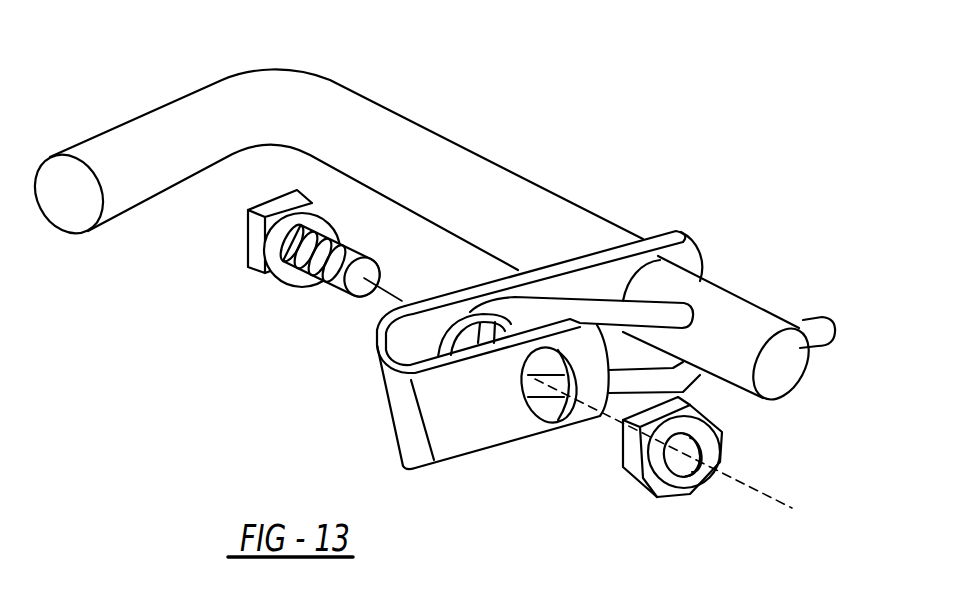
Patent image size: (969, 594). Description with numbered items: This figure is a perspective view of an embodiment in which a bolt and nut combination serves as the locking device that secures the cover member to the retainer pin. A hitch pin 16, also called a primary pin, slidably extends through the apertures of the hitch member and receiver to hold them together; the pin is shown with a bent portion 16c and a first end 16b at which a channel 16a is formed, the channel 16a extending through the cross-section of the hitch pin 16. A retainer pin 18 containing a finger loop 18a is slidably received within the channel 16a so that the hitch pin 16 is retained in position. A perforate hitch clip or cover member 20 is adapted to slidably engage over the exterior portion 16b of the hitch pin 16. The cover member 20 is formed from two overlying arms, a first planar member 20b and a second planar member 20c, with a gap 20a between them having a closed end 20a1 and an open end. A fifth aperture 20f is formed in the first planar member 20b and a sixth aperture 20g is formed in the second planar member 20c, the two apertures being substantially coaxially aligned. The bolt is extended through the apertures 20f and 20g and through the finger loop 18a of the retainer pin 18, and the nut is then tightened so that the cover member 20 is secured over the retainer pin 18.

The hitch pin 16 is at (392, 120).
The channel 16a is at (680, 308).
The first end 16b is at (753, 313).
The bar bent first end 16c is at (140, 118).
The retainer pin 18 is at (700, 375).
The finger loop 18a is at (502, 320).
The cover member 20 is at (642, 228).
The gap 20a is at (417, 338).
The closed end 20a1 is at (397, 409).
The first planar member 20b is at (478, 460).
The second planar member 20c is at (466, 303).
The fifth aperture 20f is at (443, 347).
The sixth aperture 20g is at (565, 407).